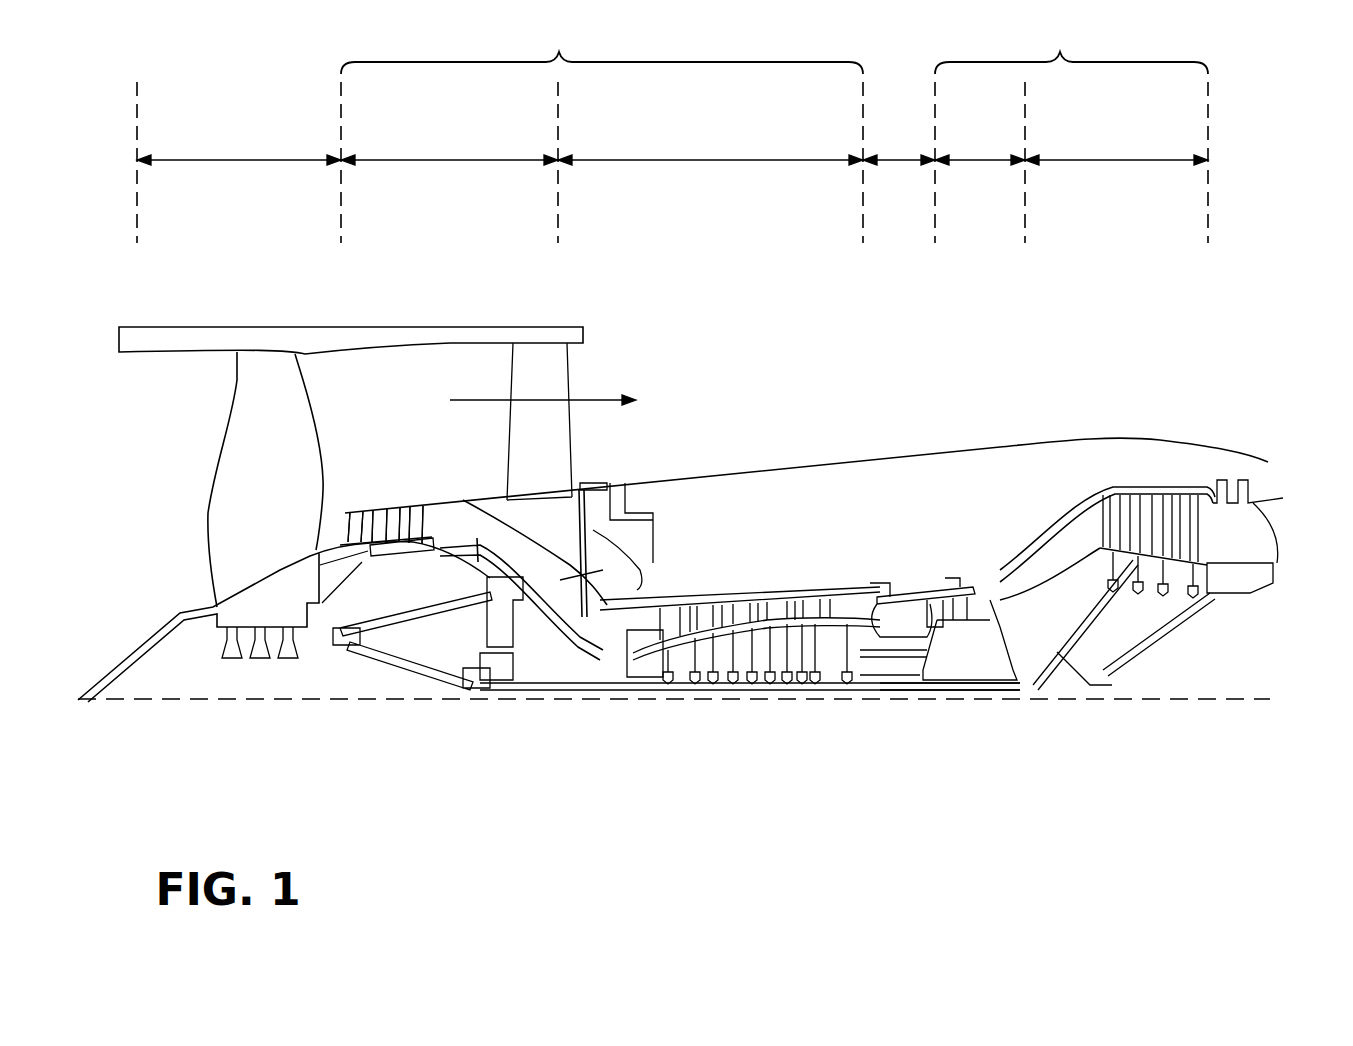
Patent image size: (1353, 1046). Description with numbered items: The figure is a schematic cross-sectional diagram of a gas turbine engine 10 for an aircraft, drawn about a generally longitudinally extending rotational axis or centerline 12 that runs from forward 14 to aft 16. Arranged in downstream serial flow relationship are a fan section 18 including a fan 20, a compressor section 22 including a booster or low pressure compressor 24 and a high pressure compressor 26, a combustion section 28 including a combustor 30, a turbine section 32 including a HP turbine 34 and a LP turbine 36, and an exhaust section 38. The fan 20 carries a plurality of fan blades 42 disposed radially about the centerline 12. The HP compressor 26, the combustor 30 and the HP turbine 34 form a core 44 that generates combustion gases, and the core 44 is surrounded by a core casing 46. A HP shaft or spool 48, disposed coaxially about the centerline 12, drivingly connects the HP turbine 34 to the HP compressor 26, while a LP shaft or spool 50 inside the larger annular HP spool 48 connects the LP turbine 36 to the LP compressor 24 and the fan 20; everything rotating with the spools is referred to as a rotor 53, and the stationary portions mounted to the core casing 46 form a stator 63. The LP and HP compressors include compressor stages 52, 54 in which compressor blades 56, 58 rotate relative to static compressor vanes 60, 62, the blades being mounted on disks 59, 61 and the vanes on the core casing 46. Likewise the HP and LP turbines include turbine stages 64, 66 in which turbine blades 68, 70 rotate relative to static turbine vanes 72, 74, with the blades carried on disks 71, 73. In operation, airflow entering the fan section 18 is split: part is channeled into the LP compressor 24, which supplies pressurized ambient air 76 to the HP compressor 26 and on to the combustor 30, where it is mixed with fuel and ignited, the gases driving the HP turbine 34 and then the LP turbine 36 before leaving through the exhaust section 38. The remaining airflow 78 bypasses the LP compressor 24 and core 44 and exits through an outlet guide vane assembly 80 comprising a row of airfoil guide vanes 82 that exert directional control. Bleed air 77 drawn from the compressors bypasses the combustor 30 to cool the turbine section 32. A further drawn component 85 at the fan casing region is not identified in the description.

The gas turbine engine 10 is at (888, 323).
The centerline 12 is at (238, 705).
The forward 14 is at (86, 463).
The aft 16 is at (1298, 551).
The fan section 18 is at (239, 149).
The fan 20 is at (173, 542).
The compressor section 22 is at (602, 48).
The low pressure compressor 24 is at (449, 149).
The high pressure compressor 26 is at (710, 149).
The combustion section 28 is at (899, 144).
The combustor 30 is at (900, 600).
The turbine section 32 is at (1071, 48).
The HP turbine 34 is at (980, 149).
The LP turbine 36 is at (1116, 149).
The exhaust section 38 is at (1283, 504).
The fan blades 42 is at (293, 407).
The core 44 is at (838, 502).
The core casing 46 is at (1068, 518).
The HP shaft or spool 48 is at (877, 660).
The LP shaft or spool 50 is at (495, 690).
The compressor stages 52 is at (400, 449).
The rotor 53 is at (442, 560).
The compressor stages 54 is at (702, 497).
The compressor blades 56 is at (378, 510).
The compressor blades 58 is at (657, 596).
The disk 59 is at (370, 555).
The static compressor vanes 60 is at (363, 510).
The disk 61 is at (627, 665).
The static compressor vanes 62 is at (640, 580).
The stator 63 is at (617, 665).
The turbine stages 64 is at (1000, 526).
The turbine stages 66 is at (1190, 383).
The turbine blades 68 is at (955, 582).
The turbine blades 70 is at (1193, 500).
The disk 71 is at (957, 657).
The static turbine vanes 72 is at (925, 588).
The disk 73 is at (1090, 570).
The static turbine vanes 74 is at (1175, 492).
The pressurized ambient air 76 is at (566, 615).
The bleed air 77 is at (730, 586).
The airflow 78 is at (468, 392).
The outlet guide vane assembly 80 is at (583, 452).
The airfoil guide vanes 82 is at (517, 438).
The nacelle 85 is at (610, 358).